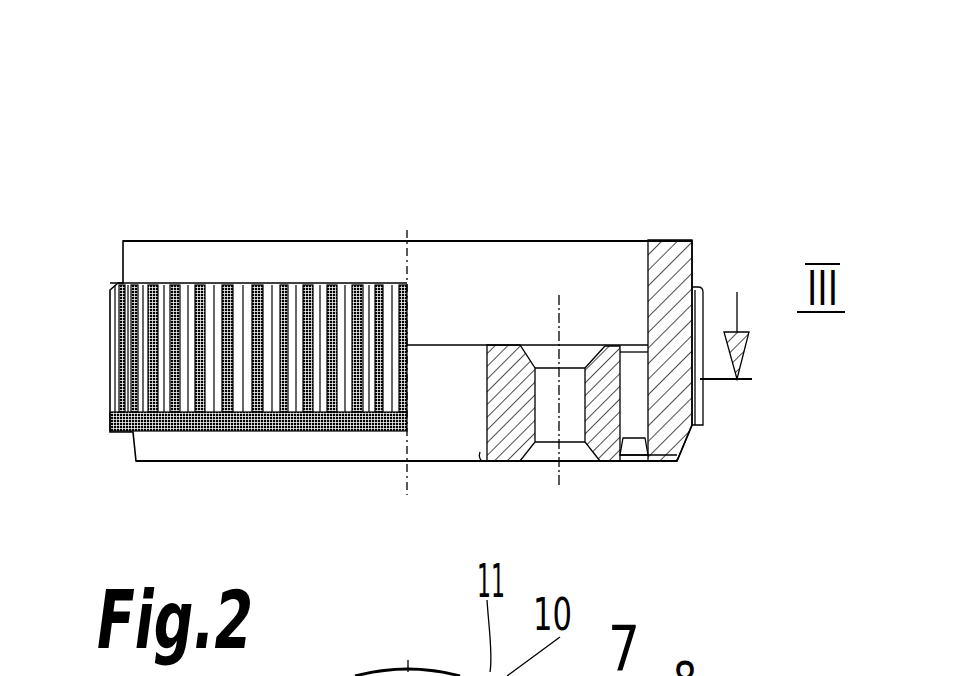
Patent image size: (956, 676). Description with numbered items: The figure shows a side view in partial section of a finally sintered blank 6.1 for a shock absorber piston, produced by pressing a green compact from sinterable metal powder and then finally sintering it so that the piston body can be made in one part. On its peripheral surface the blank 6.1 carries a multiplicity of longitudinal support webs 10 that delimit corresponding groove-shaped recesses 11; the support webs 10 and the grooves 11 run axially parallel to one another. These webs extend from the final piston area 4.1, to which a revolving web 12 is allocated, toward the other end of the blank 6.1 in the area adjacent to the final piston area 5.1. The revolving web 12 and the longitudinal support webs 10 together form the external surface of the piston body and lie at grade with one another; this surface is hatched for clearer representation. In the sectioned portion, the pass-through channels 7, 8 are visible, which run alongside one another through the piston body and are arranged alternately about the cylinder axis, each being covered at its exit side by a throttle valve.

The blank 6.1 is at (603, 201).
The final piston area 5.1 is at (175, 238).
The final piston area 4.1 is at (183, 463).
The longitudinal support webs 10 is at (262, 308).
The groove-shaped recesses 11 is at (281, 305).
The revolving web 12 is at (318, 415).
The pass-through channels 7 is at (568, 417).
The pass-through channels 8 is at (633, 415).